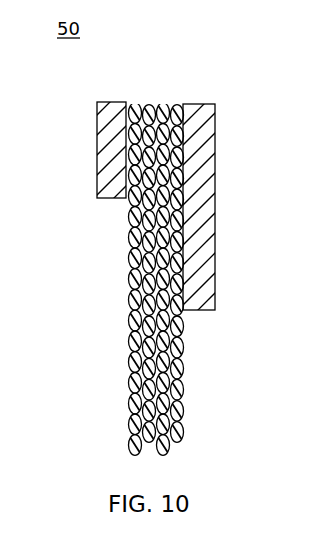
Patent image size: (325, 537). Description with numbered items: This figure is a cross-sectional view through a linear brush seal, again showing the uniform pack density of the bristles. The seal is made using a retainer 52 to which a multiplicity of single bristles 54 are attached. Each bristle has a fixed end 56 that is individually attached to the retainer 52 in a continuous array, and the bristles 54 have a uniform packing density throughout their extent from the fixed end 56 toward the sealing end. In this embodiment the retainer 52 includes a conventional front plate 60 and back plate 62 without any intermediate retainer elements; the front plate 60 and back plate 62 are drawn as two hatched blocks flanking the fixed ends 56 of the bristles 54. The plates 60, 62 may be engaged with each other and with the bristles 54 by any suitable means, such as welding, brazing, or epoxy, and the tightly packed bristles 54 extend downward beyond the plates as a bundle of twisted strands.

The retainer 52 is at (224, 111).
The bristles 54 is at (131, 398).
The fixed end 56 is at (165, 111).
The front plate 60 is at (97, 106).
The back plate 62 is at (215, 202).